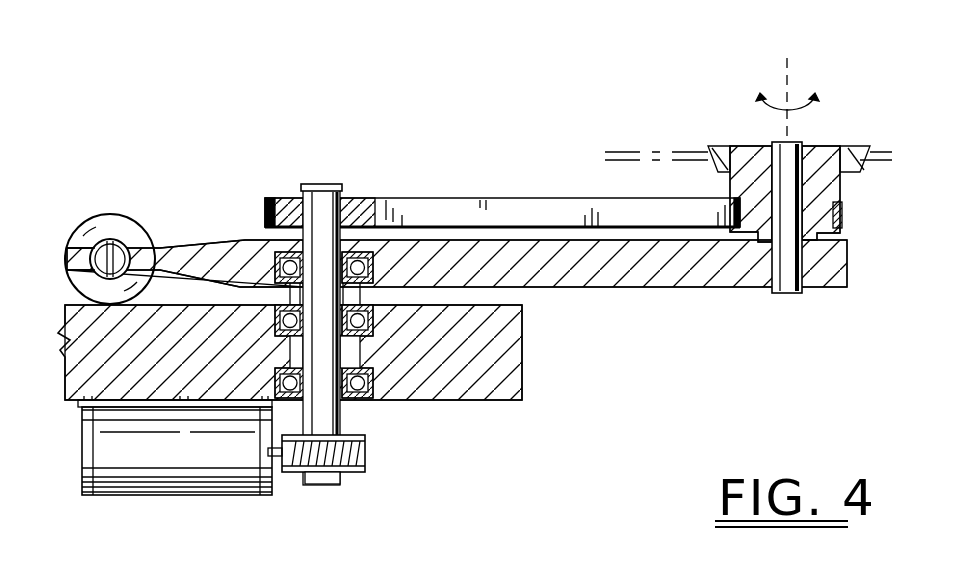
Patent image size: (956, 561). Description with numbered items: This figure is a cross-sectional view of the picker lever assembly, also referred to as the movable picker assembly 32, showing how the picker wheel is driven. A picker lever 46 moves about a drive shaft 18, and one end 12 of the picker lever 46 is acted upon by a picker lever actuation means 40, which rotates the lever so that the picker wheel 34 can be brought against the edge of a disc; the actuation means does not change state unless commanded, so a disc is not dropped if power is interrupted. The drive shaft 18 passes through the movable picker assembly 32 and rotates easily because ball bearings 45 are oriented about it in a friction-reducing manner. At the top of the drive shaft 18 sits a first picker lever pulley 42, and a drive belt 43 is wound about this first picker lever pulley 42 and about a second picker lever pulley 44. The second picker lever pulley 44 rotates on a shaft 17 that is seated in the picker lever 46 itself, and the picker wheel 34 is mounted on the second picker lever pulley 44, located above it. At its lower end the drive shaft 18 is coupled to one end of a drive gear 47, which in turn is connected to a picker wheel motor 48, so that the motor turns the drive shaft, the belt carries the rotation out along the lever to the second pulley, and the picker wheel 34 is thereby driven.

The end of picker lever 12 is at (82, 246).
The shaft 17 is at (790, 295).
The drive shaft 18 is at (320, 185).
The movable picker assembly 32 is at (522, 336).
The picker wheel 34 is at (845, 147).
The picker lever actuation means 40 is at (123, 214).
The first picker lever pulley 42 is at (335, 190).
The drive belt 43 is at (520, 198).
The second picker lever pulley 44 is at (752, 146).
The ball bearings 45 is at (264, 238).
The picker lever 46 is at (848, 270).
The drive gear 47 is at (366, 452).
The picker wheel motor 48 is at (232, 495).